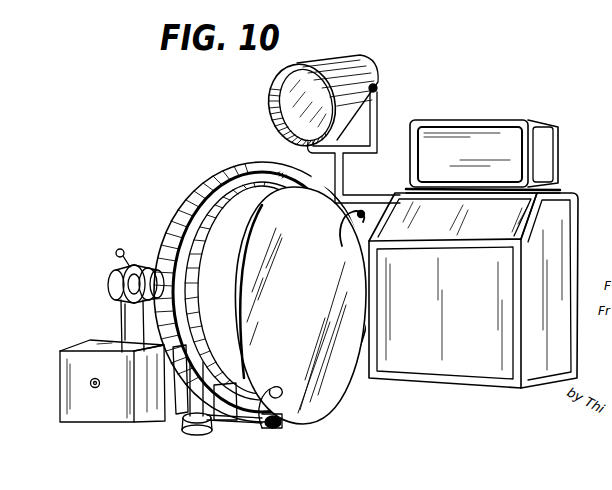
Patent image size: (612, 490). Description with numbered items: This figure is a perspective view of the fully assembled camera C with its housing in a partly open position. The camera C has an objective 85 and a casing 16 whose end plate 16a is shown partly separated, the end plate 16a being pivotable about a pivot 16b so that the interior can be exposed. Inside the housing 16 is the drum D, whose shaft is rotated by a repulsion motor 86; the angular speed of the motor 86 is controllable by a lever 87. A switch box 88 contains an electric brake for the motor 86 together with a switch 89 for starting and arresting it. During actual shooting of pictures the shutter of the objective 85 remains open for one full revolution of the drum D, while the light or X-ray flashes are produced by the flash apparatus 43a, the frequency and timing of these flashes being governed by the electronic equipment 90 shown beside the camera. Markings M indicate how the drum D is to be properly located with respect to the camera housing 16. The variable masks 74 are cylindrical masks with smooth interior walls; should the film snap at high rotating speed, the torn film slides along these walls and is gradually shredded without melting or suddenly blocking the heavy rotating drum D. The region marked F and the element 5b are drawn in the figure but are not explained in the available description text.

The casing 16 is at (173, 192).
The end plate 16a is at (337, 386).
The pivot 16b is at (246, 418).
The flash apparatus 43a is at (380, 73).
The variable masks 74 is at (177, 246).
The objective 85 is at (109, 295).
The repulsion motor 86 is at (114, 275).
The lever 87 is at (116, 250).
The shaft 5b is at (152, 267).
The switch box 88 is at (92, 346).
The switch 89 is at (90, 384).
The electronic equipment 90 is at (560, 203).
The camera C is at (203, 167).
The marking M is at (247, 179).
The drum D is at (285, 164).
The face F is at (229, 230).